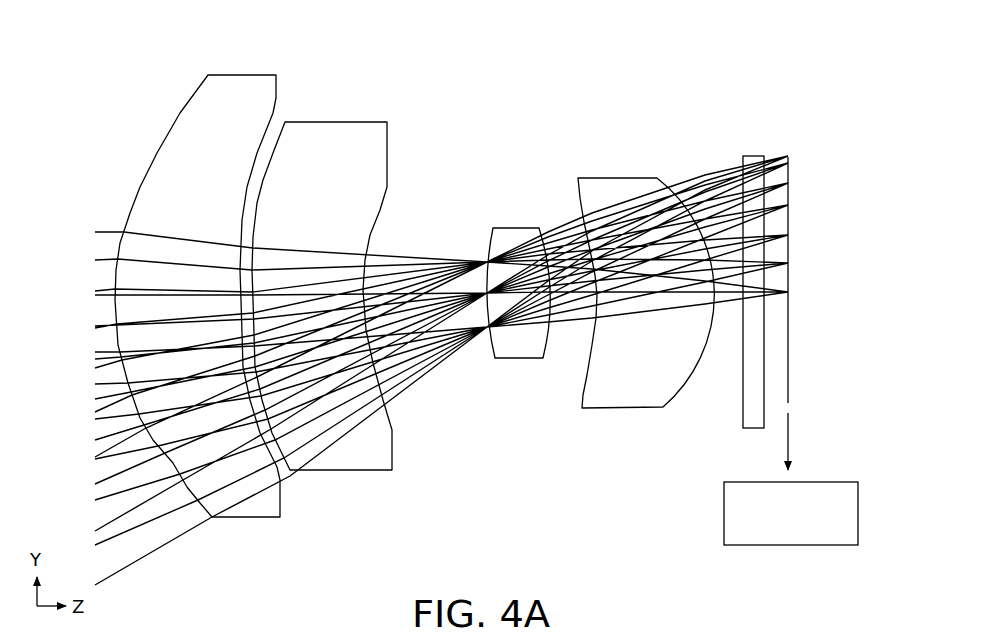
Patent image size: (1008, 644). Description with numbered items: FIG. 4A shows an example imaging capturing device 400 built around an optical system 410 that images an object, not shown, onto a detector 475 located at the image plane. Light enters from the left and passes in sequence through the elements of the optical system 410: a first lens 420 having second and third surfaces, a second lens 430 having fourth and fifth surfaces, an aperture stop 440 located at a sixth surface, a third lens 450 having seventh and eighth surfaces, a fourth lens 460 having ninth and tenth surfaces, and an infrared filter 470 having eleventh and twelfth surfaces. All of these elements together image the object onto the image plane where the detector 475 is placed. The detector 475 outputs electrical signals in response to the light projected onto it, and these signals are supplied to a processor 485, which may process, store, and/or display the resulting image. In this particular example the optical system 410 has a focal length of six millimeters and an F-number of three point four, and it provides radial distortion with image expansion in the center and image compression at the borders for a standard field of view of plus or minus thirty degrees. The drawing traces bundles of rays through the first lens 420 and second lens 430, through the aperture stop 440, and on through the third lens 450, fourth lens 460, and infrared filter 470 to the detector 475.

The imaging capturing device 400 is at (697, 60).
The optical system 410 is at (471, 103).
The first lens 420 is at (213, 179).
The second lens 430 is at (343, 200).
The aperture stop 440 is at (484, 339).
The third lens 450 is at (539, 353).
The fourth lens 460 is at (645, 396).
The infrared filter 470 is at (740, 392).
The detector 475 is at (794, 294).
The processor 485 is at (862, 513).